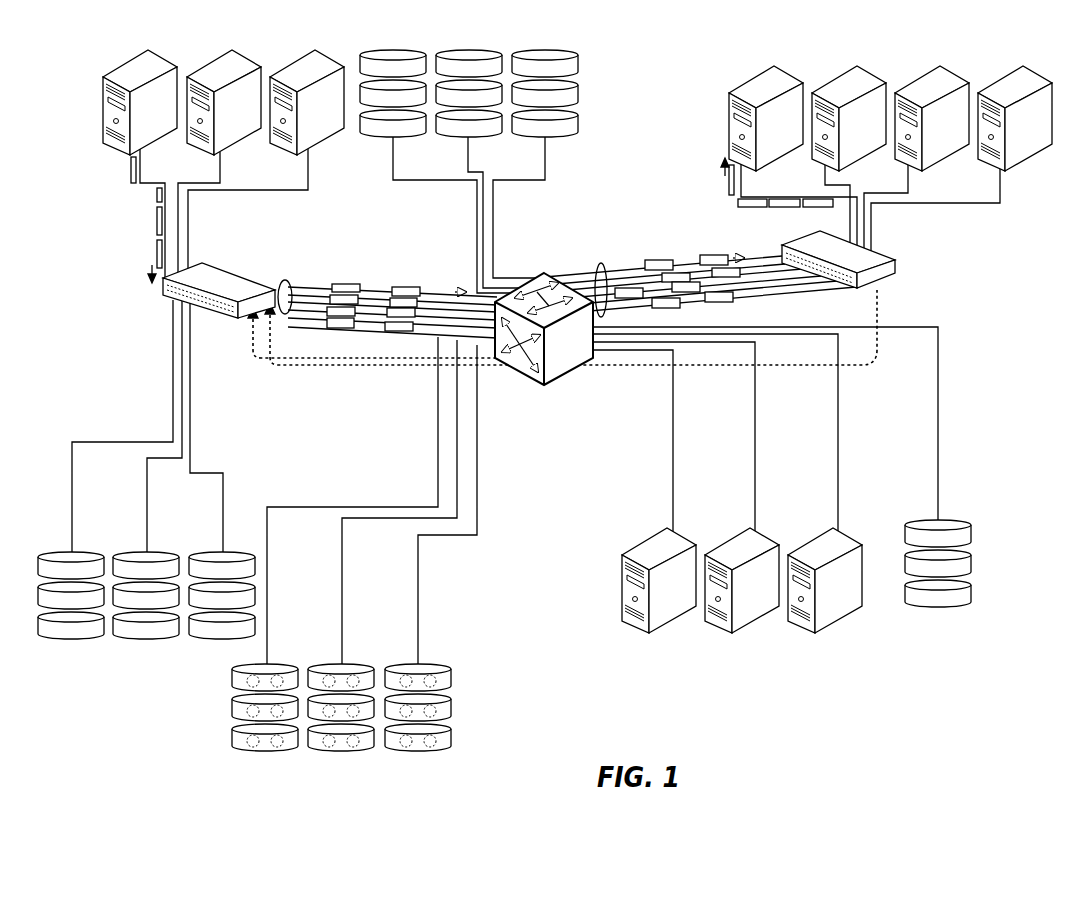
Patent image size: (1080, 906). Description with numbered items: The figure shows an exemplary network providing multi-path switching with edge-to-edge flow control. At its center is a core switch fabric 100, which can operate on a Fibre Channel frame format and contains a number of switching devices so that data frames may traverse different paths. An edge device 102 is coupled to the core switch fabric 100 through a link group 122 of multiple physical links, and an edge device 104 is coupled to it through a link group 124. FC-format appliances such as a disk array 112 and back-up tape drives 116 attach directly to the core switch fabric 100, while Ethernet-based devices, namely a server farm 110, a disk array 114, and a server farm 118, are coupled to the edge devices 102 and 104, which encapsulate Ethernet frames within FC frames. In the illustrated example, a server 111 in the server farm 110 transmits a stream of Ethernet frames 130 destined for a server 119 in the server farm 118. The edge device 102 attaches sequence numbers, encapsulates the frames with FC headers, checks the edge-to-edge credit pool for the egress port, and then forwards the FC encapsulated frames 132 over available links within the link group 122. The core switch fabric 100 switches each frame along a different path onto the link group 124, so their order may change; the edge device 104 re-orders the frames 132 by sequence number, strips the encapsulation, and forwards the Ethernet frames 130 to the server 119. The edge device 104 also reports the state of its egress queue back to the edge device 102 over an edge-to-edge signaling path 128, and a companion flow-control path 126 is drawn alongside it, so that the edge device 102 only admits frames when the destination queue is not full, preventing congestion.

The core switch fabric 100 is at (532, 385).
The edge device 102 is at (238, 275).
The edge device 104 is at (897, 256).
The server farm 110 is at (205, 80).
The server 111 is at (121, 102).
The disk array 112 is at (355, 50).
The disk array 114 is at (32, 635).
The back-up tape drives 116 is at (227, 750).
The server farm 118 is at (875, 97).
The server 119 is at (750, 118).
The link group 122 is at (283, 282).
The link group 124 is at (602, 270).
The flow control signal 126 is at (340, 359).
The edge-to-edge signaling path 128 is at (377, 367).
The Ethernet frames 130 is at (133, 184).
The FC encapsulated frames 132 is at (423, 283).